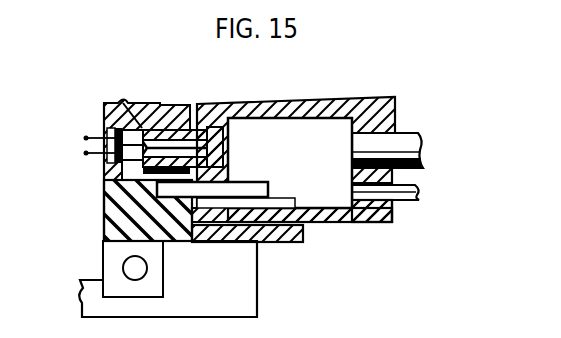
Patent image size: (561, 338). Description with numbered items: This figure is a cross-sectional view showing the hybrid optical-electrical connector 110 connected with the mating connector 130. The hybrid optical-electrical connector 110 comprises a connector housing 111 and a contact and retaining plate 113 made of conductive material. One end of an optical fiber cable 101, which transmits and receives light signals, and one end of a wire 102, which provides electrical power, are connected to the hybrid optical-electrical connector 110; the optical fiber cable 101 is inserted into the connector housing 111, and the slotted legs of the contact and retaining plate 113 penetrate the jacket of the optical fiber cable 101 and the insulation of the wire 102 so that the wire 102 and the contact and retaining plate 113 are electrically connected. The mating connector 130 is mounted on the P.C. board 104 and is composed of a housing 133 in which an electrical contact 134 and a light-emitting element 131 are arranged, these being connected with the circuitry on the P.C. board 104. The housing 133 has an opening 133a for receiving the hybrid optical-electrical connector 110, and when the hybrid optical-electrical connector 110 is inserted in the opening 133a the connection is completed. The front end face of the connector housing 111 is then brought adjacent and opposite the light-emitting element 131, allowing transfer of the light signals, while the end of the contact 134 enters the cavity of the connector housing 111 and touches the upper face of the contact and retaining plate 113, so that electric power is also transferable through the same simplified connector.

The optical fiber cable 101 is at (412, 134).
The wire 102 is at (412, 202).
The P.C. board 104 is at (242, 300).
The hybrid optical-electrical connector 110 is at (372, 234).
The connector housing 111 is at (390, 98).
The contact and retaining plate 113 is at (337, 224).
The mating connector 130 is at (97, 231).
The light-emitting element 131 is at (126, 104).
The housing 133 is at (104, 200).
The opening 133a is at (312, 224).
The electrical contact 134 is at (243, 182).